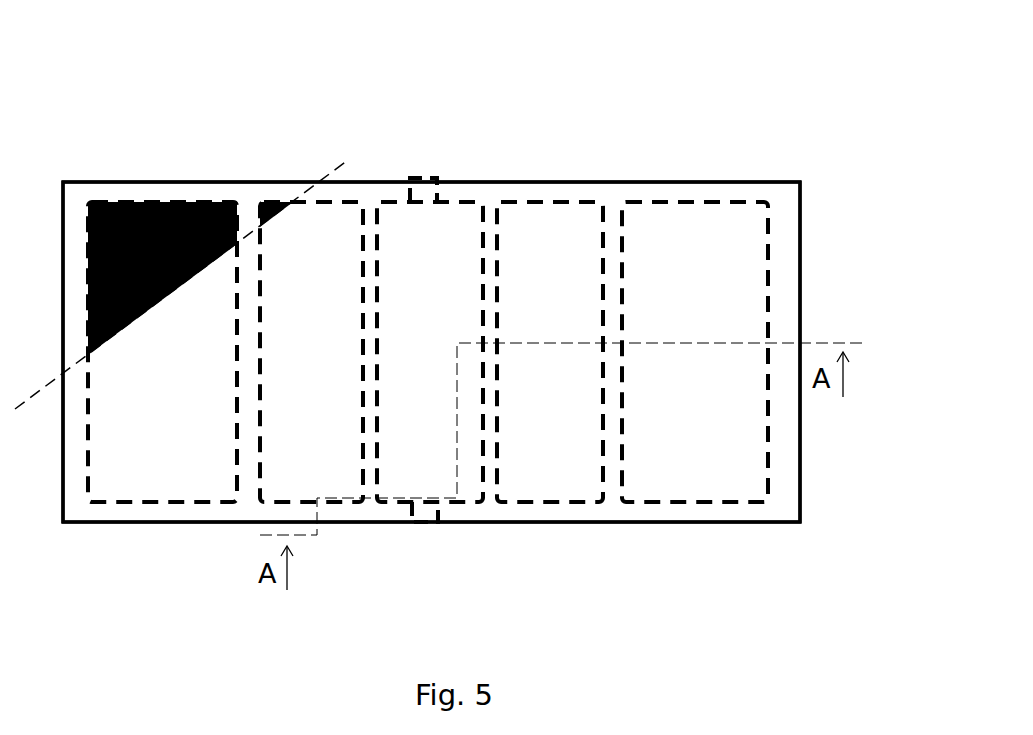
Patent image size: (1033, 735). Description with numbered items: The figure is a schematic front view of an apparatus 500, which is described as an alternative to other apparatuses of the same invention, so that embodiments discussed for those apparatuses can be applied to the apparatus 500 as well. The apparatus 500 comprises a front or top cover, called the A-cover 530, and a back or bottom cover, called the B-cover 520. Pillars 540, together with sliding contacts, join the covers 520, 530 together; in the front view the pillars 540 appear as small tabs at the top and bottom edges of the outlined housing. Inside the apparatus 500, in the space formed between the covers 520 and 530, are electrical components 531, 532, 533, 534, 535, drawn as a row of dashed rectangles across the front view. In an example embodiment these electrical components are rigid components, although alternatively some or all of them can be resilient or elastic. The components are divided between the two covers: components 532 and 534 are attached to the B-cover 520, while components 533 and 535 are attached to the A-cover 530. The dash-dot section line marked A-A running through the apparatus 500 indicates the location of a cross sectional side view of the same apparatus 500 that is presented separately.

The apparatus 500 is at (677, 36).
The B-cover 520 is at (431, 307).
The A-cover 530 is at (431, 398).
The electrical component 531 is at (162, 304).
The electrical component 532 is at (311, 304).
The electrical component 533 is at (457, 300).
The electrical component 534 is at (562, 300).
The electrical component 535 is at (695, 300).
The pillars 540 is at (423, 347).